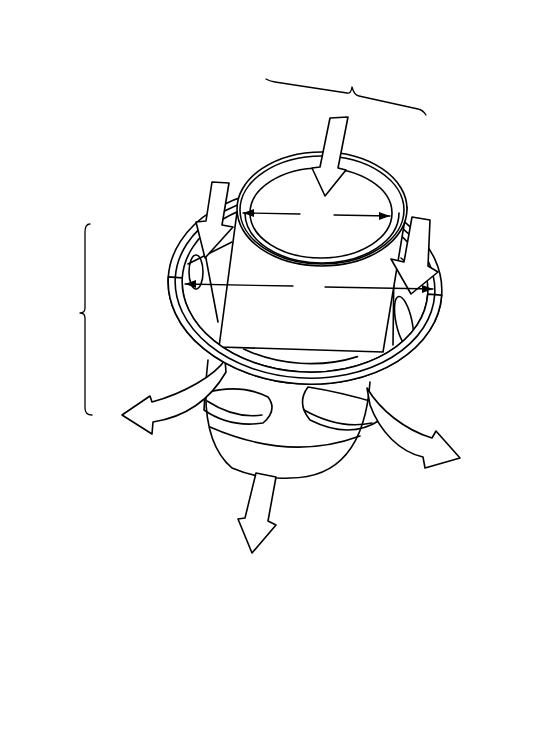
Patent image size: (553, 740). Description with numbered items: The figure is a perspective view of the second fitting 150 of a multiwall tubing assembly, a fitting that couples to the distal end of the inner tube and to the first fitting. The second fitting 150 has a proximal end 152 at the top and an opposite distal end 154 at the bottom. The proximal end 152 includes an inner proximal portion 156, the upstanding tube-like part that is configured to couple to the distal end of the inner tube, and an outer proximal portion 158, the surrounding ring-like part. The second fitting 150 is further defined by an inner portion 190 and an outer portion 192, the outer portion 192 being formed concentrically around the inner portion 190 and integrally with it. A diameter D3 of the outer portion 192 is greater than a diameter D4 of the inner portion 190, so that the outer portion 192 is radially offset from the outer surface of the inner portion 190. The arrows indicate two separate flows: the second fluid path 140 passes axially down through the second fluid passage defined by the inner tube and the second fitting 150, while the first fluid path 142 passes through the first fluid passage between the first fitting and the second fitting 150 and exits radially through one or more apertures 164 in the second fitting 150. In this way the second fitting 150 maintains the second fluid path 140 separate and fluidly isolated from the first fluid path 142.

The second fitting 150 is at (59, 99).
The proximal end 152 is at (199, 142).
The distal end 154 is at (190, 483).
The inner proximal portion 156 is at (254, 163).
The outer proximal portion 158 is at (180, 253).
The apertures 164 is at (300, 392).
The second fluid path 140 is at (346, 137).
The first fluid path 142 is at (212, 196).
The inner portion 190 is at (346, 83).
The outer portion 192 is at (65, 319).
The diameter of the outer portion D3 is at (309, 286).
The diameter of inner portion D4 is at (316, 216).